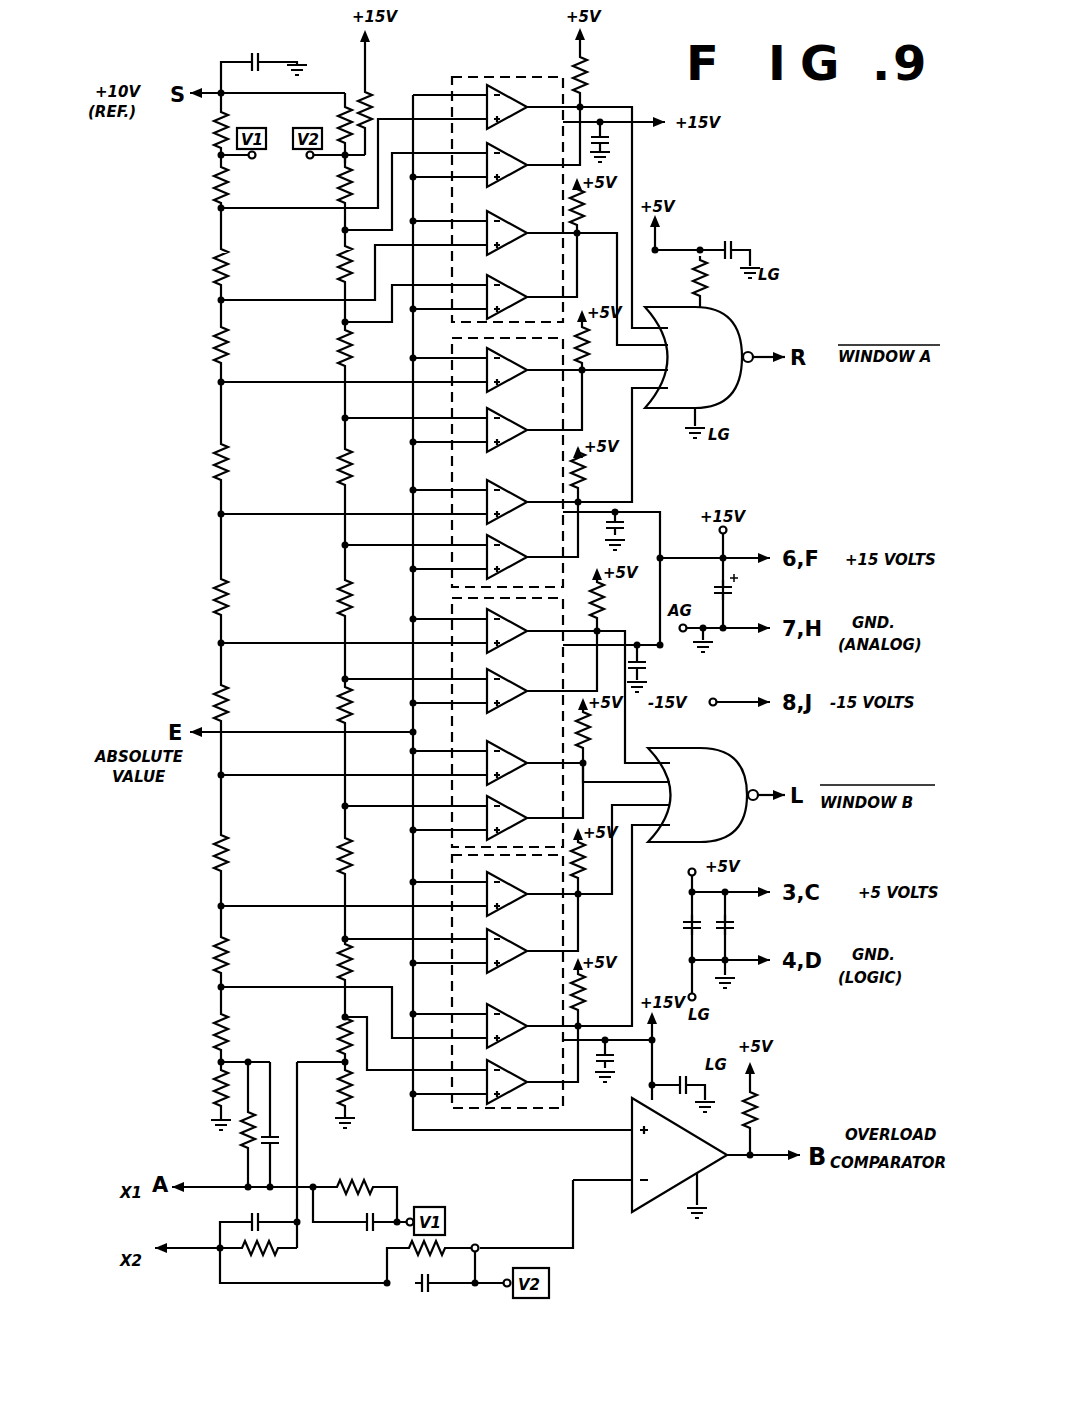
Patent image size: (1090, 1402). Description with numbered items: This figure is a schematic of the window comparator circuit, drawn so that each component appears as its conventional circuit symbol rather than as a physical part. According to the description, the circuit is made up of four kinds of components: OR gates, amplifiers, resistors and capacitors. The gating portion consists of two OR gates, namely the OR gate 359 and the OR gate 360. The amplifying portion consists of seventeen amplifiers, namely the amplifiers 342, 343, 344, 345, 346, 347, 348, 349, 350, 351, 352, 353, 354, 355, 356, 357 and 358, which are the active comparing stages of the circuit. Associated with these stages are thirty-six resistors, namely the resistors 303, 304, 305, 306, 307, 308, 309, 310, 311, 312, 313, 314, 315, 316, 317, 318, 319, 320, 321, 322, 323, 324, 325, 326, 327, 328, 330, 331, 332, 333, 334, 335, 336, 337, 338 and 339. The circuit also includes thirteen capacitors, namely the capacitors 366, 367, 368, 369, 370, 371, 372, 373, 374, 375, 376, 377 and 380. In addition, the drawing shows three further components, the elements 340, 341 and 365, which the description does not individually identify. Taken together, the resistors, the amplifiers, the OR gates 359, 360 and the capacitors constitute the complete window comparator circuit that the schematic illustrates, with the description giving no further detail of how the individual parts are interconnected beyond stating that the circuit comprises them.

The resistor 303 is at (206, 144).
The resistor 304 is at (210, 186).
The resistor 305 is at (214, 260).
The resistor 306 is at (206, 350).
The resistor 307 is at (210, 462).
The resistor 308 is at (202, 595).
The resistor 309 is at (210, 698).
The resistor 310 is at (212, 845).
The resistor 311 is at (208, 960).
The resistor 312 is at (208, 1038).
The resistor 313 is at (328, 128).
The resistor 314 is at (332, 186).
The resistor 315 is at (324, 278).
The resistor 316 is at (327, 354).
The resistor 317 is at (327, 464).
The resistor 318 is at (330, 599).
The resistor 319 is at (332, 700).
The resistor 320 is at (332, 850).
The resistor 321 is at (335, 962).
The resistor 322 is at (335, 1034).
The resistor 323 is at (370, 1092).
The resistor 324 is at (205, 1092).
The resistor 325 is at (222, 1146).
The resistor 326 is at (246, 1258).
The resistor 327 is at (362, 1182).
The resistor 328 is at (443, 1245).
The resistor 330 is at (590, 76).
The resistor 331 is at (578, 210).
The resistor 332 is at (590, 344).
The resistor 333 is at (590, 472).
The resistor 334 is at (600, 594).
The resistor 335 is at (598, 737).
The resistor 336 is at (593, 864).
The resistor 337 is at (588, 980).
The resistor 338 is at (377, 86).
The resistor 339 is at (711, 292).
The logic ground 340 is at (758, 270).
The pull-up resistor 341 is at (766, 1090).
The amplifier 342 is at (540, 82).
The amplifier 343 is at (512, 154).
The amplifier 344 is at (508, 216).
The amplifier 345 is at (512, 286).
The amplifier 346 is at (500, 382).
The amplifier 347 is at (507, 421).
The amplifier 348 is at (502, 478).
The amplifier 349 is at (502, 540).
The amplifier 350 is at (500, 622).
The amplifier 351 is at (503, 674).
The amplifier 352 is at (502, 738).
The amplifier 353 is at (505, 800).
The amplifier 354 is at (496, 878).
The amplifier 355 is at (498, 930).
The amplifier 356 is at (500, 1000).
The amplifier 357 is at (498, 1070).
The amplifier 358 is at (704, 1172).
The OR gate 359 is at (729, 326).
The OR gate 360 is at (735, 760).
The capacitor 365 is at (246, 56).
The capacitor 366 is at (286, 1138).
The capacitor 367 is at (246, 1218).
The capacitor 368 is at (368, 1236).
The capacitor 369 is at (408, 1296).
The capacitor 370 is at (614, 138).
The capacitor 371 is at (623, 512).
The capacitor 372 is at (647, 661).
The capacitor 373 is at (608, 1042).
The capacitor 374 is at (674, 1072).
The capacitor 375 is at (680, 930).
The capacitor 376 is at (733, 924).
The capacitor 377 is at (732, 588).
The capacitor 380 is at (728, 240).